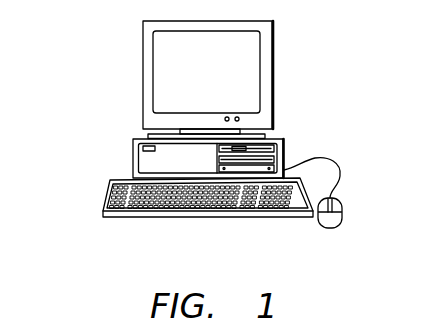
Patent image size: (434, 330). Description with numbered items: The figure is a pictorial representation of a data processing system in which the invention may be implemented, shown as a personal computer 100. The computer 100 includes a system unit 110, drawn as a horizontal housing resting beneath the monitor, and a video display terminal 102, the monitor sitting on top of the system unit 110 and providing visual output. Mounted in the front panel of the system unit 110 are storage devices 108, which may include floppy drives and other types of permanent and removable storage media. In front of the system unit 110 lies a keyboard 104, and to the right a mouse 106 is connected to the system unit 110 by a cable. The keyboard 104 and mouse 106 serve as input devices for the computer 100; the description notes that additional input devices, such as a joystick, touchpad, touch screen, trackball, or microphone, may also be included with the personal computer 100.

The computer 100 is at (86, 63).
The video display terminal 102 is at (273, 73).
The keyboard 104 is at (127, 218).
The mouse 106 is at (331, 229).
The storage devices 108 is at (283, 153).
The system unit 110 is at (132, 163).